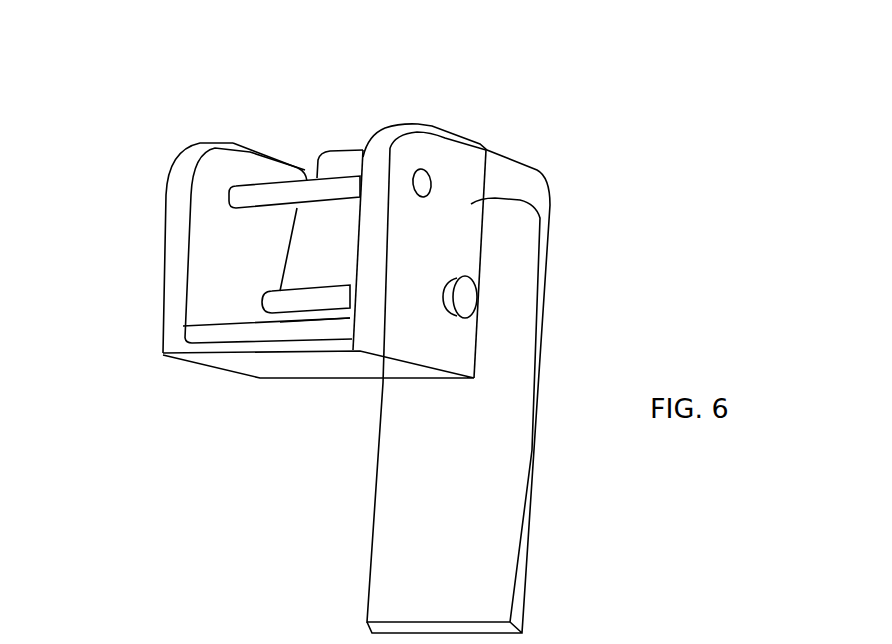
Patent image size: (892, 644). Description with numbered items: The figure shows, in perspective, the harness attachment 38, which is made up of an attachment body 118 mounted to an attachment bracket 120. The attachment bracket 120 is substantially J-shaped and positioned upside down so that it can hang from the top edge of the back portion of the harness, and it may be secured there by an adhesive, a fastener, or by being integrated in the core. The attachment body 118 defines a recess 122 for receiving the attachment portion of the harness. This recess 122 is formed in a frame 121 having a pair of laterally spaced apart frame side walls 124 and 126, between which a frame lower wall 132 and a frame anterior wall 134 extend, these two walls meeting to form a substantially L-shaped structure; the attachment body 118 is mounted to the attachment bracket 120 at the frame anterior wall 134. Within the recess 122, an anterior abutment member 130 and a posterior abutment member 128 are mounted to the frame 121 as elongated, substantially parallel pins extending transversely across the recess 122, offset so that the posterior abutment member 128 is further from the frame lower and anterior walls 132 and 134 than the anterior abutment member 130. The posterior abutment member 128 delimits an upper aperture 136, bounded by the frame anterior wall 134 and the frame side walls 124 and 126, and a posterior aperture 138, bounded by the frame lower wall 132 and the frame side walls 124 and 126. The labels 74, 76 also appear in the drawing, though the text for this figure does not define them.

The harness attachment 38 is at (710, 133).
The attachment body 118 is at (510, 107).
The attachment bracket 120 is at (567, 405).
The frame 121 is at (507, 198).
The recess 122 is at (193, 230).
The frame side wall 124 is at (200, 267).
The frame side wall 126 is at (437, 236).
The posterior abutment member 128 is at (273, 195).
The anterior abutment member 130 is at (333, 297).
The frame lower wall 132 is at (288, 322).
The frame anterior wall 134 is at (347, 162).
The upper aperture 136 is at (234, 143).
The posterior aperture 138 is at (193, 207).
The tool 74 is at (614, 643).
The tool shank 76 is at (614, 643).